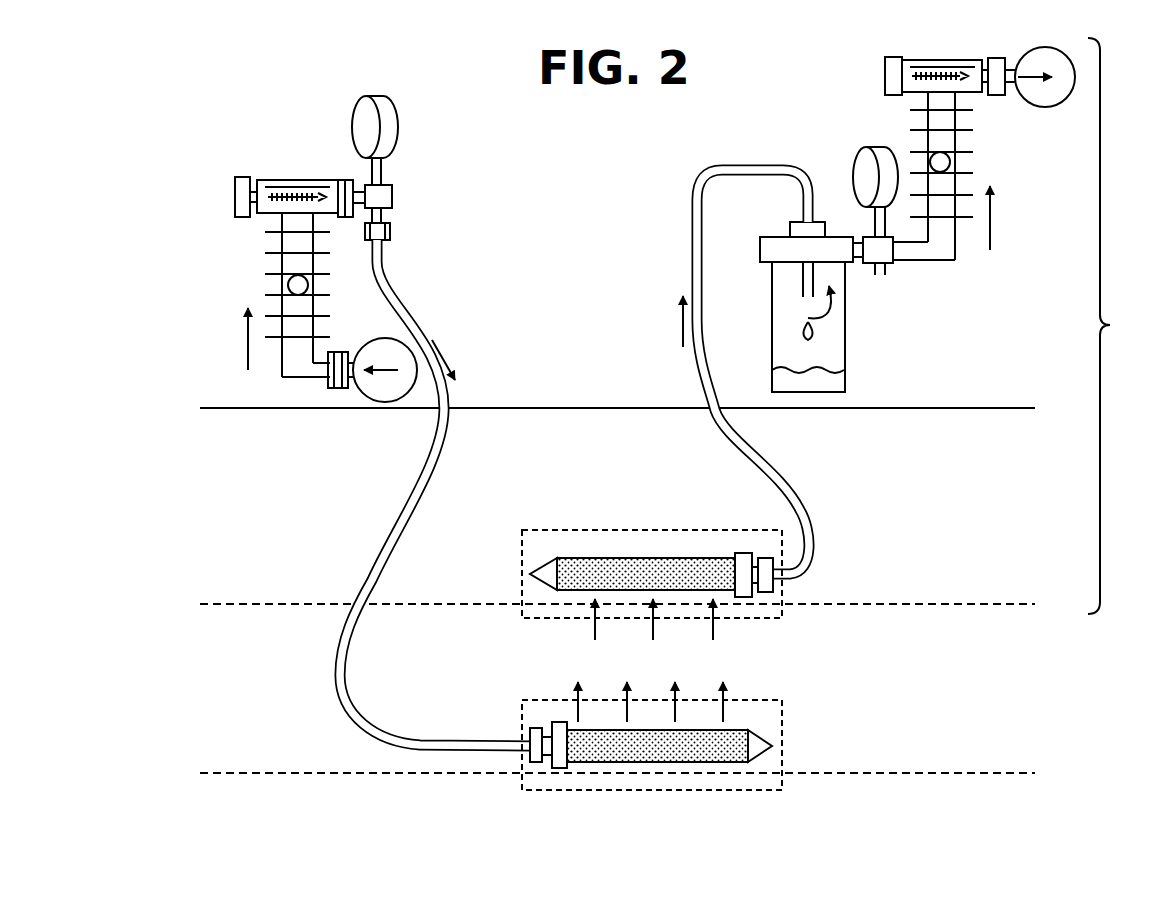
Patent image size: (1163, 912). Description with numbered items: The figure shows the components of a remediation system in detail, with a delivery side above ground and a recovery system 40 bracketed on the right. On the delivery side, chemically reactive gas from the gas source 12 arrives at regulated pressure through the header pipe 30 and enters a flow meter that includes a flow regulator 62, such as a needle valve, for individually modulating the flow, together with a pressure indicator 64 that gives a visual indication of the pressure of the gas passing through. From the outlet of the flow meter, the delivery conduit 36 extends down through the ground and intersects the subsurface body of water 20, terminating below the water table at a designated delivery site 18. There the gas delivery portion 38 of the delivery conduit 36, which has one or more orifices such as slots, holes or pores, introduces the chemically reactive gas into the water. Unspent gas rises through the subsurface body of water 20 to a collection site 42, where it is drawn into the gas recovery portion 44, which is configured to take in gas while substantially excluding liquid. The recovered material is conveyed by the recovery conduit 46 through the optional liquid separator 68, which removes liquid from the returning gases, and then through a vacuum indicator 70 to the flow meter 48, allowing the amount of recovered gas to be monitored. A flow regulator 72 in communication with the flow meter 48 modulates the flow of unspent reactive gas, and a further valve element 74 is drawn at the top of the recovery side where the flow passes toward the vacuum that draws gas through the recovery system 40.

The gas source 12 is at (162, 88).
The delivery site 18 is at (652, 740).
The subsurface body of water 20 is at (852, 698).
The header pipe 30 is at (371, 340).
The delivery conduit 36 is at (424, 500).
The gas delivery portion 38 is at (661, 764).
The recovery system 40 is at (1118, 326).
The collection site 42 is at (652, 548).
The gas recovery portion 44 is at (650, 558).
The recovery conduit 46 is at (814, 517).
The flow meter 48 is at (957, 240).
The flow regulator 62 is at (231, 193).
The pressure indicator 64 is at (400, 125).
The liquid separator 68 is at (845, 348).
The vacuum indicator 70 is at (853, 177).
The flow regulator 72 is at (262, 243).
The regulating valve 74 is at (885, 75).